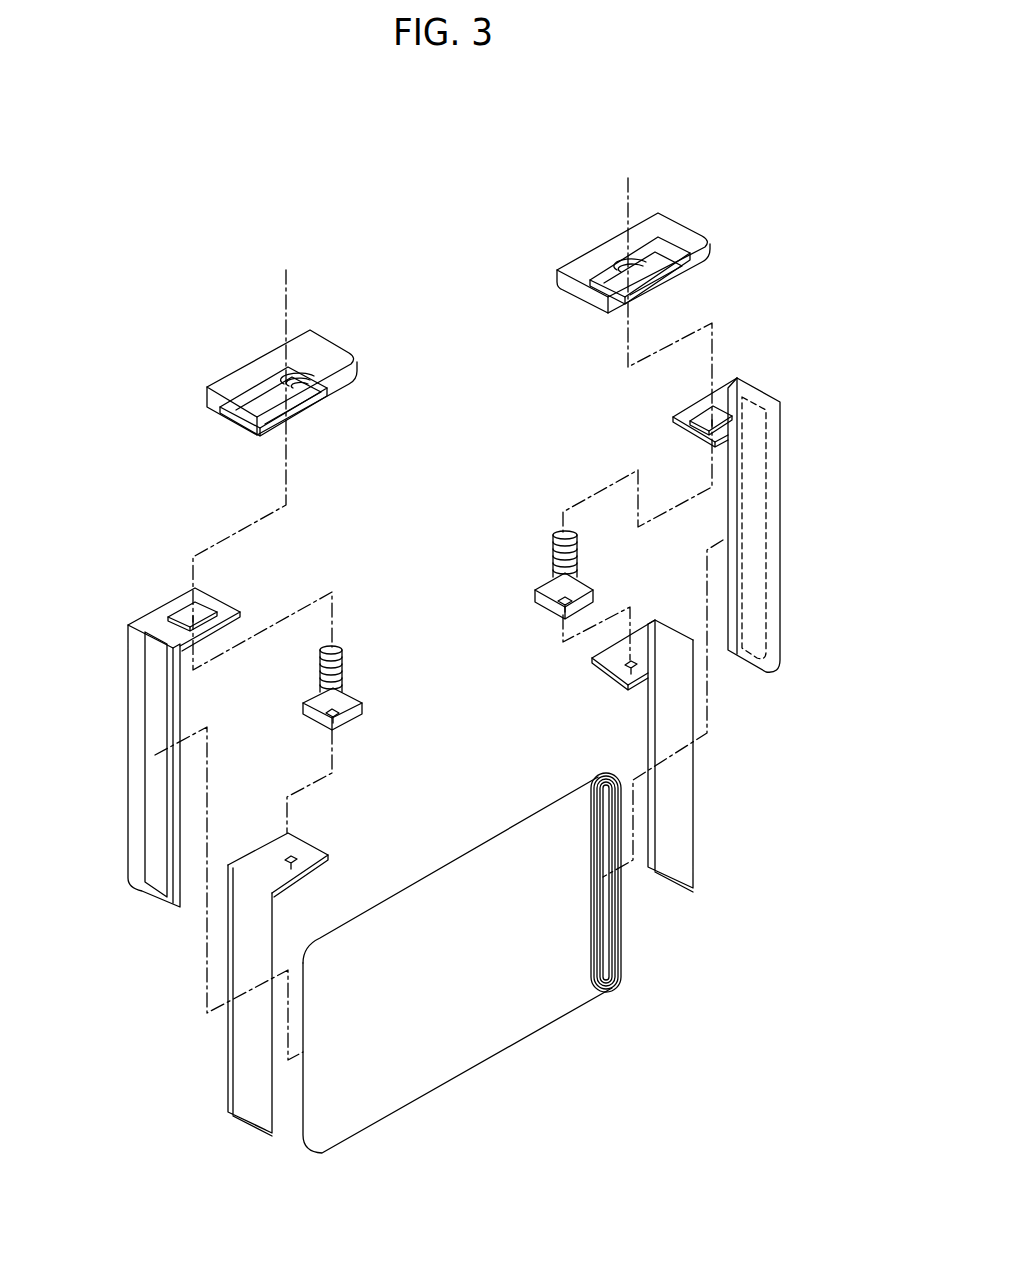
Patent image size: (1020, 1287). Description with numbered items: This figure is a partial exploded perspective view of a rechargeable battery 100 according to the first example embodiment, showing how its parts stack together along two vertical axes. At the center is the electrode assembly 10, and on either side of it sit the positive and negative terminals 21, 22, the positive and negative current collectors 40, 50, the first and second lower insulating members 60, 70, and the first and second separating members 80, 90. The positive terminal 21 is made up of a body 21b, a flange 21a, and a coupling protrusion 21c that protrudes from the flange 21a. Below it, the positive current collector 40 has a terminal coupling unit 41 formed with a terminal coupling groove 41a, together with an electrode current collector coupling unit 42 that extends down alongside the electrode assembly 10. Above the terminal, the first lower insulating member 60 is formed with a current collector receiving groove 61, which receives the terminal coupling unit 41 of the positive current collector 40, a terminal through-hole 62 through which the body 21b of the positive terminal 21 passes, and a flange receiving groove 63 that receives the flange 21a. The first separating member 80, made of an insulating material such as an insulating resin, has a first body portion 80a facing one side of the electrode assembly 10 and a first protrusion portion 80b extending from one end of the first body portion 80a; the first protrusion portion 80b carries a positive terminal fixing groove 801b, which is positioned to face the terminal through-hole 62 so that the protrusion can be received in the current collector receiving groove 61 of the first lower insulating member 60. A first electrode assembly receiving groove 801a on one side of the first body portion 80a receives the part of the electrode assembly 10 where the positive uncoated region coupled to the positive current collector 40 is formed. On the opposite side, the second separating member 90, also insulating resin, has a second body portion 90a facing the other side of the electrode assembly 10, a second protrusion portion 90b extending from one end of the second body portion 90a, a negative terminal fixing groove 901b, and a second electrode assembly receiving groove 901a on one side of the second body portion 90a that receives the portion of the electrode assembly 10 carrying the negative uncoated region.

The rechargeable battery 100 is at (422, 188).
The electrode assembly 10 is at (640, 957).
The positive terminal 21 is at (377, 693).
The flange 21a is at (377, 740).
The body 21b is at (344, 674).
The coupling protrusion 21c is at (336, 725).
The negative terminal 22 is at (530, 553).
The positive current collector 40 is at (273, 976).
The terminal coupling unit 41 is at (313, 856).
The terminal coupling groove 41a is at (292, 866).
The electrode current collector coupling unit 42 is at (243, 1090).
The negative current collector 50 is at (714, 843).
The first lower insulating member 60 is at (268, 396).
The current collector receiving groove 61 is at (243, 412).
The terminal through-hole 62 is at (302, 387).
The flange receiving groove 63 is at (297, 392).
The second lower insulating member 70 is at (728, 247).
The first separating member 80 is at (146, 713).
The first body portion 80a is at (116, 766).
The first protrusion portion 80b is at (157, 585).
The first electrode assembly receiving groove 801a is at (158, 793).
The positive terminal fixing groove 801b is at (188, 613).
The second separating member 90 is at (702, 521).
The second body portion 90a is at (785, 552).
The second protrusion portion 90b is at (648, 416).
The second electrode assembly receiving groove 901a is at (750, 632).
The negative terminal fixing groove 901b is at (707, 421).